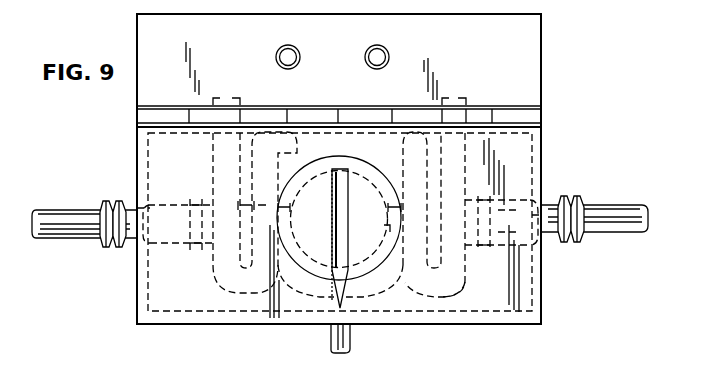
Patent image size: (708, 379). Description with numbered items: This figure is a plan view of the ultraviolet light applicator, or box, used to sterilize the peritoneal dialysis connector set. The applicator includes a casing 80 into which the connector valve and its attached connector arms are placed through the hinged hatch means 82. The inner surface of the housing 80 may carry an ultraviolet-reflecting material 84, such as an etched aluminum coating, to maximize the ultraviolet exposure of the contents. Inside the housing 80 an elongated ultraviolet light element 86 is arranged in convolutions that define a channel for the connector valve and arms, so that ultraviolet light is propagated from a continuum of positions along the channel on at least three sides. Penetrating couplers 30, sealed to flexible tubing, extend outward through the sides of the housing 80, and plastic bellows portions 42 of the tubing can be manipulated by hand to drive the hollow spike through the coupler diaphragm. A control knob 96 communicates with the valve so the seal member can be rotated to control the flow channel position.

The penetrating coupler 30 is at (128, 205).
The plastic bellows portion 42 is at (105, 250).
The casing 80 is at (533, 152).
The hinged hatch means 82 is at (265, 312).
The ultraviolet-reflecting material 84 is at (163, 312).
The elongated ultraviolet light element 86 is at (462, 277).
The control knob 96 is at (377, 214).